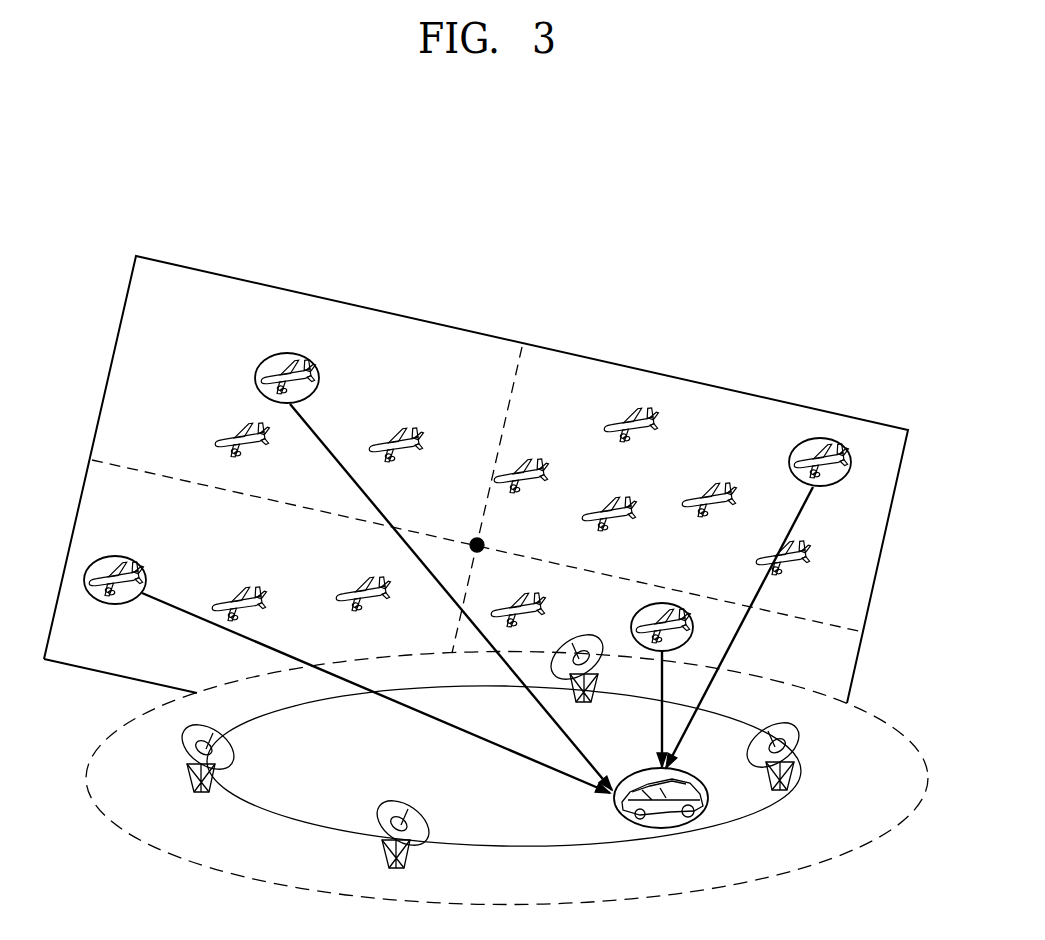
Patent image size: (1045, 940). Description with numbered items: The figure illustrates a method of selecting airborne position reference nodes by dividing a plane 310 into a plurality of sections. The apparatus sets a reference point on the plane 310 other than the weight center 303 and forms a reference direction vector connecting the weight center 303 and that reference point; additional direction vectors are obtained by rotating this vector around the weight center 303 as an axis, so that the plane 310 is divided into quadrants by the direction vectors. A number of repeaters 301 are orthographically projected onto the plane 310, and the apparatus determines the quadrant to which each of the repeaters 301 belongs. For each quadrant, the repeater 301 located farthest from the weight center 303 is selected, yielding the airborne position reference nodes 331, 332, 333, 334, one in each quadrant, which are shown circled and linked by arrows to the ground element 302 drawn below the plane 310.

The plane 310 is at (173, 264).
The repeaters 301 is at (640, 420).
The ground vehicle / terminal 302 is at (707, 801).
The weight center 303 is at (476, 538).
The airborne position reference node 331 is at (828, 438).
The airborne position reference node 332 is at (297, 353).
The airborne position reference node 333 is at (118, 553).
The airborne position reference node 334 is at (681, 606).